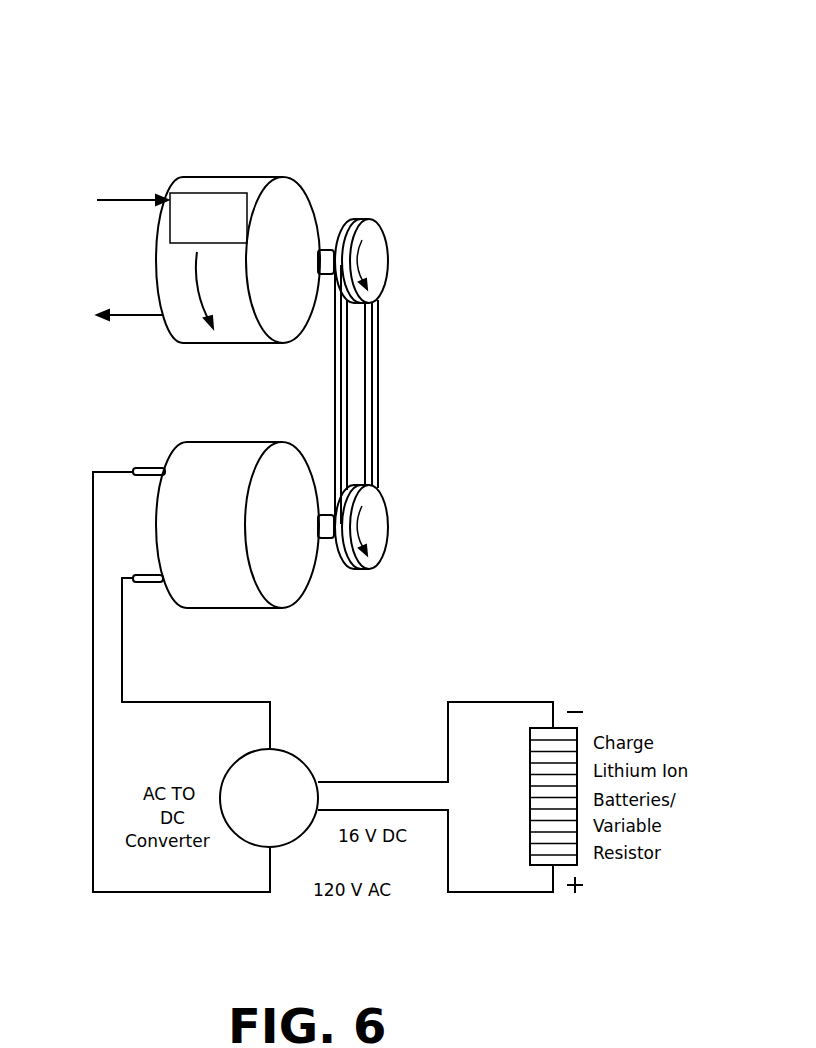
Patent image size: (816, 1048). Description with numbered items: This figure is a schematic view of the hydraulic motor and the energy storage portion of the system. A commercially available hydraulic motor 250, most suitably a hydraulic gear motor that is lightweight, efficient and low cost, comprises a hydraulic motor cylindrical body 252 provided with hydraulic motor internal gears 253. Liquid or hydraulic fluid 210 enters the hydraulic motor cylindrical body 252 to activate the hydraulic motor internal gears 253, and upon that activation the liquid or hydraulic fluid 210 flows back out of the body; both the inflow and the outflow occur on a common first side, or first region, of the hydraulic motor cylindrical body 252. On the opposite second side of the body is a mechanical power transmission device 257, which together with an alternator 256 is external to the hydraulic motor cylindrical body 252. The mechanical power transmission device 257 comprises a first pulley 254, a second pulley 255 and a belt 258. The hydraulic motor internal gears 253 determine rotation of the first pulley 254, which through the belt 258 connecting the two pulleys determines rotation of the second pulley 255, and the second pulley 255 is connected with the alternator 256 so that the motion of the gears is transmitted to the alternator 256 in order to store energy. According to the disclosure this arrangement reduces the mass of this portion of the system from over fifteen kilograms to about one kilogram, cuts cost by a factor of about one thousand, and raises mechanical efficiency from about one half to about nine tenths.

The liquid or hydraulic fluid 210 is at (97, 200).
The hydraulic motor 250 is at (340, 192).
The hydraulic motor cylindrical body 252 is at (302, 198).
The hydraulic motor internal gears 253 is at (213, 193).
The first pulley 254 is at (395, 240).
The second pulley 255 is at (378, 520).
The alternator 256 is at (298, 580).
The mechanical power transmission device 257 is at (472, 387).
The belt 258 is at (375, 397).